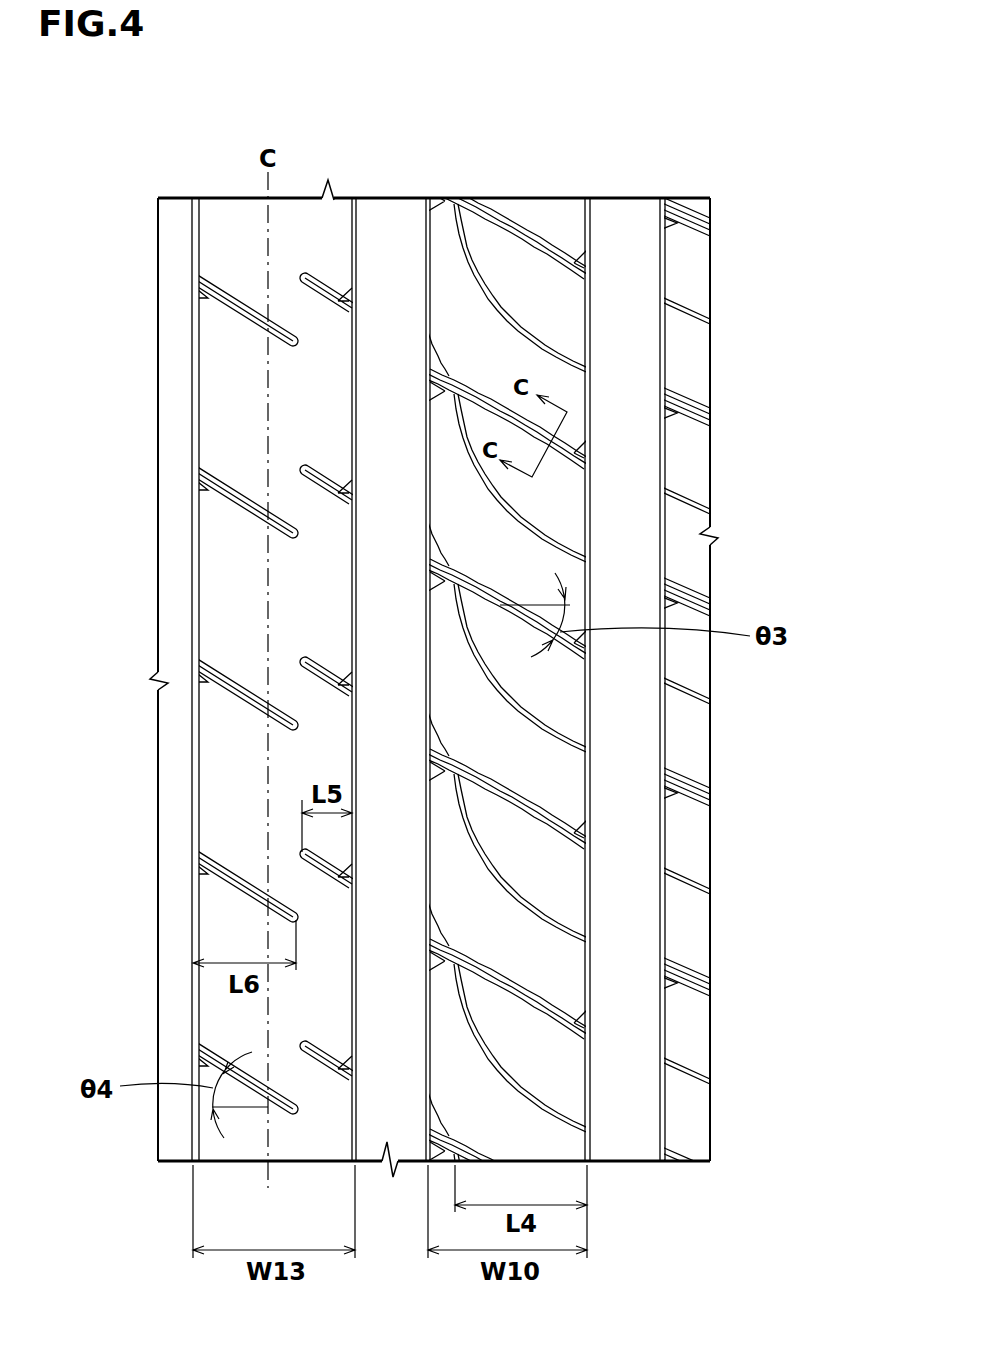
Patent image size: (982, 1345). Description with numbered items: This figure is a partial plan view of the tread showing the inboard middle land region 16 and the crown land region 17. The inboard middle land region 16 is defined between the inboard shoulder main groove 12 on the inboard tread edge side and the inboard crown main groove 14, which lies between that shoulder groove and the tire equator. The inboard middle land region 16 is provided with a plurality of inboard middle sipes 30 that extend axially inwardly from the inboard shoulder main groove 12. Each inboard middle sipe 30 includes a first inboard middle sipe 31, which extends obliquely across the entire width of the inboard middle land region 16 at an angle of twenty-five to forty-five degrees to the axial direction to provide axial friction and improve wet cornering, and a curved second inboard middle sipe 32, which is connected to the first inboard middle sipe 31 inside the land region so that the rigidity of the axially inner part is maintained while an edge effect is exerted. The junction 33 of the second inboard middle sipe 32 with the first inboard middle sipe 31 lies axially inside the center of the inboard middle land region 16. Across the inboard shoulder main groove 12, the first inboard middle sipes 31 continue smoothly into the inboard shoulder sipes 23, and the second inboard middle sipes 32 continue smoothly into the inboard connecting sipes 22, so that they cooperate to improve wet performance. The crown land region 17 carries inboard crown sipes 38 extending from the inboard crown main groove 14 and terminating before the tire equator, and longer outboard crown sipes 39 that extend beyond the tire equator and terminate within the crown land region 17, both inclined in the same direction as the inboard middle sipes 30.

The inboard shoulder main groove 12 is at (628, 237).
The inboard crown main groove 14 is at (392, 231).
The inboard middle land region 16 is at (532, 270).
The crown land region 17 is at (240, 230).
The inboard connecting sipe 22 is at (698, 993).
The inboard shoulder sipe 23 is at (698, 875).
The inboard middle sipe 30 is at (788, 752).
The first inboard middle sipe 31 is at (487, 387).
The second inboard middle sipe 32 is at (556, 523).
The junction 33 is at (469, 771).
The inboard crown sipe 38 is at (328, 461).
The outboard crown sipe 39 is at (230, 506).